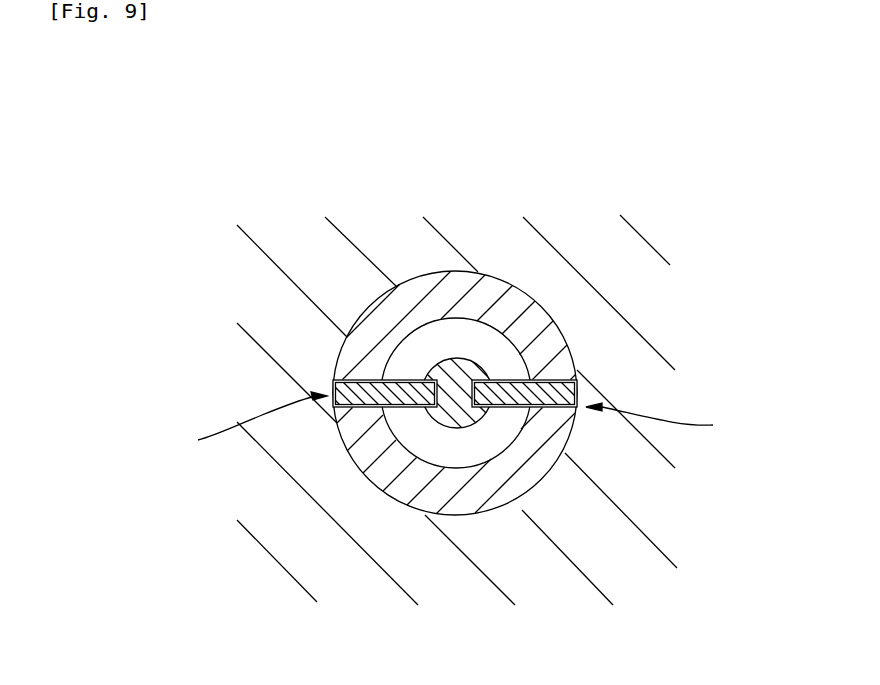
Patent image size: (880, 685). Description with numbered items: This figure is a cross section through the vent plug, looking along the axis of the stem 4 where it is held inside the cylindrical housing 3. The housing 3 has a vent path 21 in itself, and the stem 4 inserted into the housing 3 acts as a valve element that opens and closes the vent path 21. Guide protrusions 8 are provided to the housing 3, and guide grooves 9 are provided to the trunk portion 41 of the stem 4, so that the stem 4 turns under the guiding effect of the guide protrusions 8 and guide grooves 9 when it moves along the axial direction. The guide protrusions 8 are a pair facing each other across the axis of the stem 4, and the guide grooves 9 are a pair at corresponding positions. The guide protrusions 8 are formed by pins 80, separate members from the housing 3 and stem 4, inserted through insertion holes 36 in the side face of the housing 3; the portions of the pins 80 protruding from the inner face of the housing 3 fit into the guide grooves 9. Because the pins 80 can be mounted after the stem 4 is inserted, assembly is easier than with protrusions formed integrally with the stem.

The housing 3 is at (425, 420).
The stem 4 is at (477, 408).
The guide protrusions 8 is at (527, 353).
The guide grooves 9 is at (347, 337).
The vent path 21 is at (457, 462).
The insertion holes 36 is at (342, 380).
The trunk portion 41 is at (457, 358).
The pins 80 is at (456, 423).